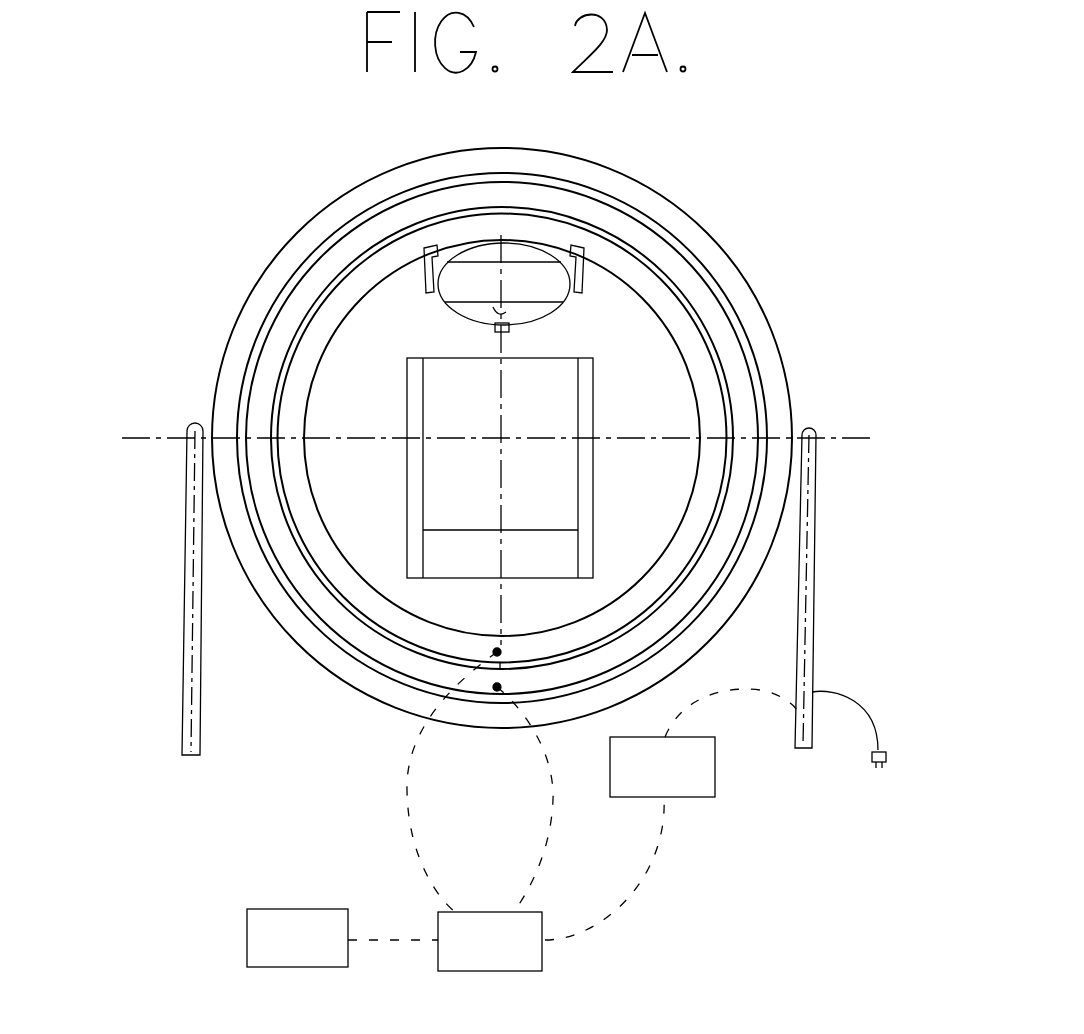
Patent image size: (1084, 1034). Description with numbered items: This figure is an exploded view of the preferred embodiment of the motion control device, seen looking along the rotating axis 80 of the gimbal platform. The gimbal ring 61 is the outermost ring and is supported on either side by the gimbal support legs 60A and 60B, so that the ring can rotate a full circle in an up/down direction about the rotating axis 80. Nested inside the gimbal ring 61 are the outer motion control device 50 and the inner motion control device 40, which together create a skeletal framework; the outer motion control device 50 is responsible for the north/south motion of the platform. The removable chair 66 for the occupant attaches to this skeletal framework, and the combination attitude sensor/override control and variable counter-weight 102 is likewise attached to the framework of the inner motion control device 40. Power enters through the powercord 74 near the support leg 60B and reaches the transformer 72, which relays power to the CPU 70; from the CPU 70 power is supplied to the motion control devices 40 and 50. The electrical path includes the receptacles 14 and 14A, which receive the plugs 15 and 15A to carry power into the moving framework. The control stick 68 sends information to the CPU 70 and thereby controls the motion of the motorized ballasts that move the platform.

The receptacle 14 is at (510, 638).
The receptacle 14A is at (517, 693).
The plug 15 is at (392, 821).
The plug 15A is at (569, 829).
The inner motion control device 40 is at (306, 302).
The outer motion control device 50 is at (366, 205).
The gimbal ring 61 is at (642, 168).
The chair 66 is at (610, 454).
The control stick 68 is at (231, 932).
The CPU 70 is at (559, 977).
The transformer 72 is at (732, 788).
The powercord 74 is at (905, 737).
The rotating axis 80 is at (834, 425).
The combination attitude sensor/override control and variable counter-weight 102 is at (586, 306).
The gimbal support leg 60A is at (832, 540).
The gimbal support leg 60B is at (170, 539).